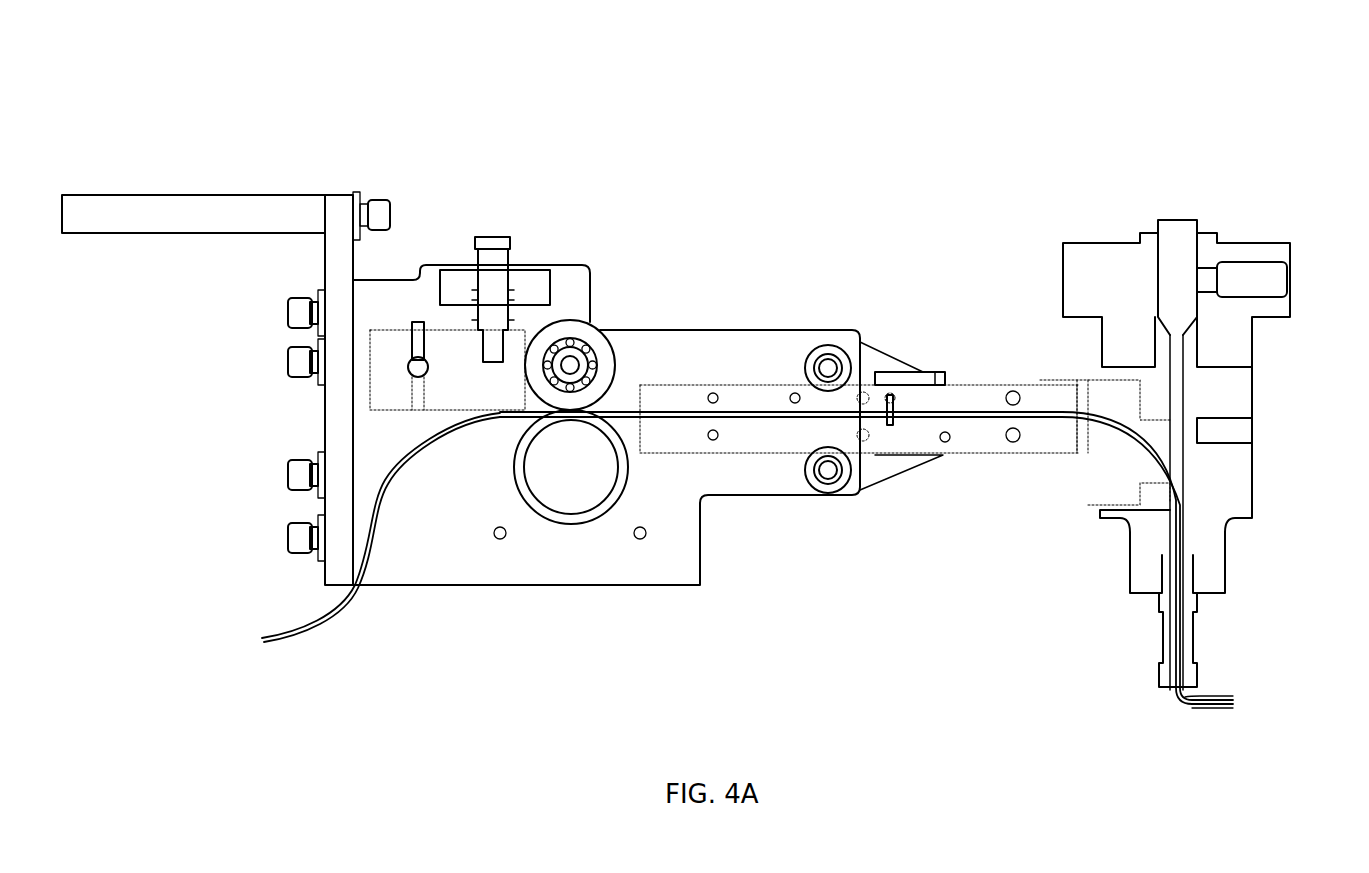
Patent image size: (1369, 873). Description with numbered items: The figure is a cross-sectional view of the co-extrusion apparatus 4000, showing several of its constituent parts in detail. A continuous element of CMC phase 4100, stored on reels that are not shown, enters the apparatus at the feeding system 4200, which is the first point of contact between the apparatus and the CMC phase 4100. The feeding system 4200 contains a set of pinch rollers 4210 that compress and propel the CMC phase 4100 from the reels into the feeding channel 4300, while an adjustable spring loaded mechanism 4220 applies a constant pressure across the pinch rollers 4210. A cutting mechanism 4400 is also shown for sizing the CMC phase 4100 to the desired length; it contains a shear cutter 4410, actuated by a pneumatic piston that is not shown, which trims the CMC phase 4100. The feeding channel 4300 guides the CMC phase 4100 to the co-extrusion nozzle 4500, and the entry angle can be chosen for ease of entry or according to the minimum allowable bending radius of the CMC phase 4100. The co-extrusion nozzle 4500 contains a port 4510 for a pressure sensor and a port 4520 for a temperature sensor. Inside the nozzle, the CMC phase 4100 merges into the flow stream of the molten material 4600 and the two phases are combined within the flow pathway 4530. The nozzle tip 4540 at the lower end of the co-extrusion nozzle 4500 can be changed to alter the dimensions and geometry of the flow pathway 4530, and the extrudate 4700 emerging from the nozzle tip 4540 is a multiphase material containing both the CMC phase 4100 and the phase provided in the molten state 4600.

The co-extrusion apparatus 4000 is at (382, 106).
The CMC phase 4100 is at (268, 646).
The feeding system 4200 is at (560, 226).
The pinch rollers 4210 is at (601, 418).
The adjustable spring loaded mechanism 4220 is at (447, 325).
The feeding channel 4300 is at (783, 383).
The cutting mechanism 4400 is at (920, 364).
The shear cutter 4410 is at (890, 430).
The co-extrusion nozzle 4500 is at (1305, 362).
The port for a pressure sensor 4510 is at (1330, 248).
The port for a temperature sensor 4520 is at (1242, 433).
The flow pathway 4530 is at (1182, 449).
The nozzle tip 4540 is at (1198, 640).
The molten material 4600 is at (1180, 216).
The extrudate 4700 is at (1170, 708).